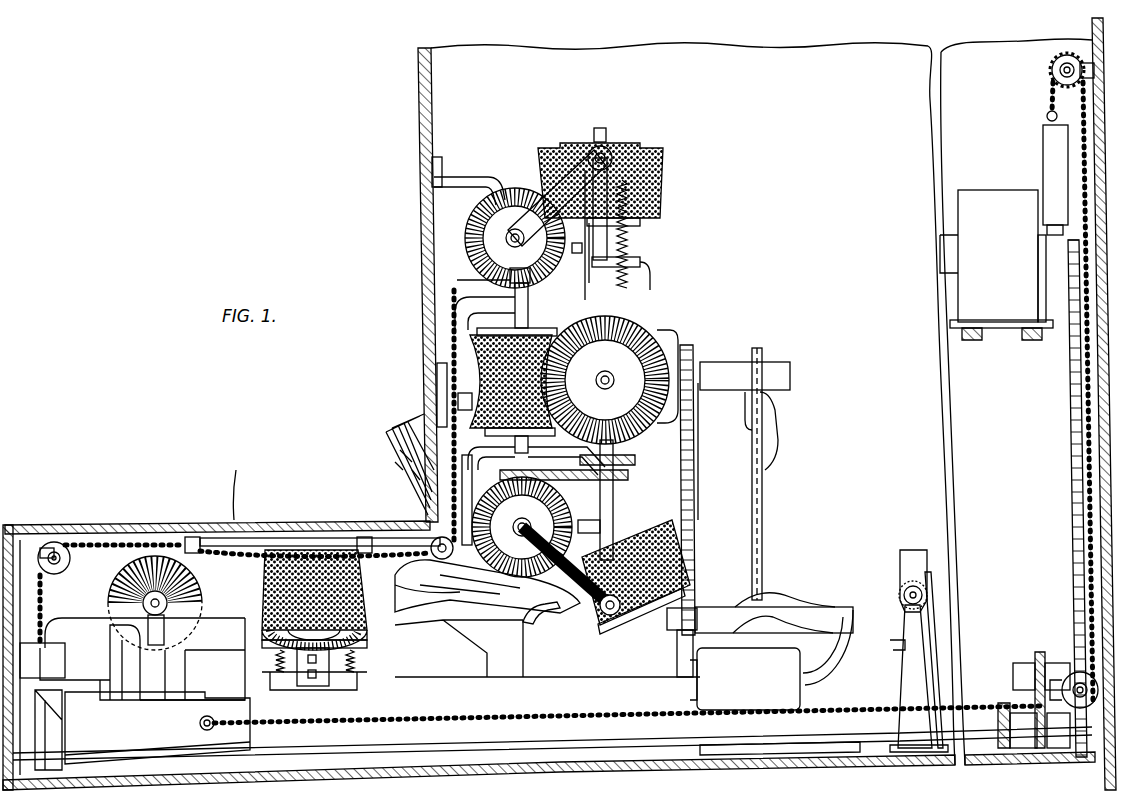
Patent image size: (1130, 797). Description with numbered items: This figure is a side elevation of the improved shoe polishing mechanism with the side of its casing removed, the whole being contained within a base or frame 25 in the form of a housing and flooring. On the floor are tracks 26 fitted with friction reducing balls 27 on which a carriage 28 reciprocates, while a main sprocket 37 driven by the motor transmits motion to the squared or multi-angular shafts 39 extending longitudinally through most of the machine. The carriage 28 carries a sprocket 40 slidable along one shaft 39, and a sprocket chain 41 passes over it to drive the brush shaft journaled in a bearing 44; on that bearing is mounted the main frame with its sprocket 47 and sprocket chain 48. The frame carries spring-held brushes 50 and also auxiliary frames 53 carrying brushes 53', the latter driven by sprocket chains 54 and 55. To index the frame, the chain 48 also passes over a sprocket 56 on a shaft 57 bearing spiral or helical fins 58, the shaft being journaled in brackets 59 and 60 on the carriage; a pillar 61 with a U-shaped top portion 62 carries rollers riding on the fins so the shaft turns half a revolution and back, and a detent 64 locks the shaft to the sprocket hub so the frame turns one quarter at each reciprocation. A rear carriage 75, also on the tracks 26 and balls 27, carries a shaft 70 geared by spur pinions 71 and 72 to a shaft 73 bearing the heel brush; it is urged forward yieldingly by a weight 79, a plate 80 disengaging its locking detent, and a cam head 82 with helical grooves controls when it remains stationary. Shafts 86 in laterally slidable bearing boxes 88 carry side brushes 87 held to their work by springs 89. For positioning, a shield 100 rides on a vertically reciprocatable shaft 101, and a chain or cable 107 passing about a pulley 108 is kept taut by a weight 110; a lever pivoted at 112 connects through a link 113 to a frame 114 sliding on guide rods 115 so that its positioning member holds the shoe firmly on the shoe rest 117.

The base or frame 25 is at (534, 766).
The tracks 26 is at (773, 745).
The balls 27 is at (850, 742).
The carriage 28 is at (707, 732).
The main sprocket 37 is at (1097, 404).
The squared or multi-angular shafts 39 is at (853, 727).
The sprocket 40 is at (608, 235).
The sprocket chain 41 is at (763, 502).
The bearing 44 is at (716, 366).
The sprocket 47 is at (690, 352).
The sprocket chain 48 is at (762, 355).
The brushes 50 is at (663, 168).
The auxiliary frames 53 is at (566, 349).
The brushes 53' is at (407, 380).
The sprocket chain 54 is at (597, 146).
The sprocket chain 55 is at (630, 258).
The sprocket 56 is at (680, 635).
The shaft 57 is at (822, 617).
The spiral or helical fins 58 is at (797, 587).
The bracket 59 is at (837, 648).
The bracket 60 is at (680, 652).
The pillar 61 is at (930, 646).
The U-shaped top portion 62 is at (910, 556).
The detent 64 is at (723, 644).
The shaft 70 is at (157, 664).
The spur pinion 71 is at (175, 612).
The spur pinion 72 is at (197, 576).
The shaft 73 is at (108, 604).
The rear carriage 75 is at (157, 728).
The weight 79 is at (1053, 135).
The plate 80 is at (992, 202).
The cam head 82 is at (40, 712).
The shafts 86 is at (348, 670).
The side brushes 87 is at (372, 617).
The bearing boxes 88 is at (311, 674).
The springs 89 is at (270, 660).
The shield 100 is at (410, 447).
The vertically reciprocatable shaft 101 is at (427, 430).
The chain or cable 107 is at (440, 358).
The pulley 108 is at (487, 618).
The weight 110 is at (42, 626).
The pivot 112 is at (244, 484).
The link 113 is at (340, 528).
The frame 114 is at (362, 536).
The guide rods 115 is at (137, 534).
The shoe rest 117 is at (528, 619).